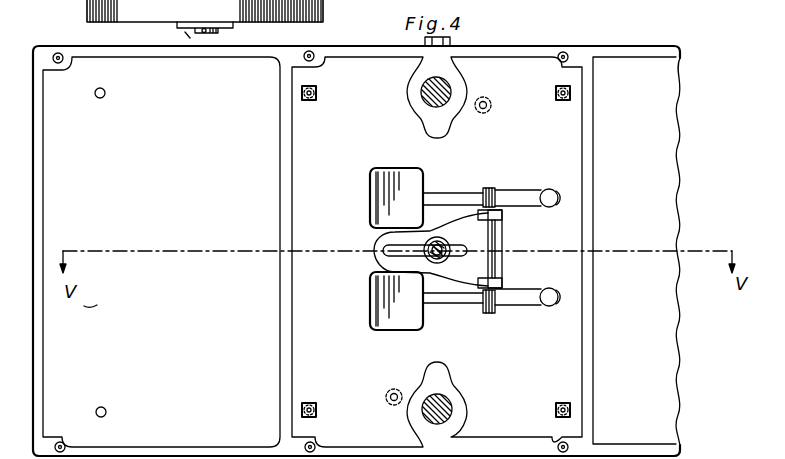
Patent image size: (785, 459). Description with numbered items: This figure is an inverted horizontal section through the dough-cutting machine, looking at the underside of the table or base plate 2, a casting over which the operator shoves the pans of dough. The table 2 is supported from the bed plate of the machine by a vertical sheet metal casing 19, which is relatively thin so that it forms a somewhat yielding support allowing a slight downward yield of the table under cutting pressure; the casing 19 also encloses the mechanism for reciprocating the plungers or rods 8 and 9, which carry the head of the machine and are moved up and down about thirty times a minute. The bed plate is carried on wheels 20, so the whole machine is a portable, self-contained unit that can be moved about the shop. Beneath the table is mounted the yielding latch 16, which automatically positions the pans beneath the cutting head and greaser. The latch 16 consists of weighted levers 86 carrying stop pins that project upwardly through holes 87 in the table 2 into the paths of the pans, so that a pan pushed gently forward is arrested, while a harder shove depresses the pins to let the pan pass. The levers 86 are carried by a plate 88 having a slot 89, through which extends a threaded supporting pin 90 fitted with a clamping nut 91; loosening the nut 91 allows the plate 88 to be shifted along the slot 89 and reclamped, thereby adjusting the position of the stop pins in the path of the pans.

The table or base plate 2 is at (678, 195).
The plunger or rod 8 is at (421, 92).
The plunger or rod 9 is at (425, 412).
The yielding latch 16 is at (512, 195).
The vertical sheet metal casing 19 is at (578, 46).
The wheels 20 is at (323, 12).
The weighted lever 86 is at (454, 198).
The holes 87 is at (518, 207).
The plate 88 is at (429, 264).
The slot 89 is at (385, 257).
The threaded supporting pin 90 is at (441, 243).
The clamping nut 91 is at (438, 264).